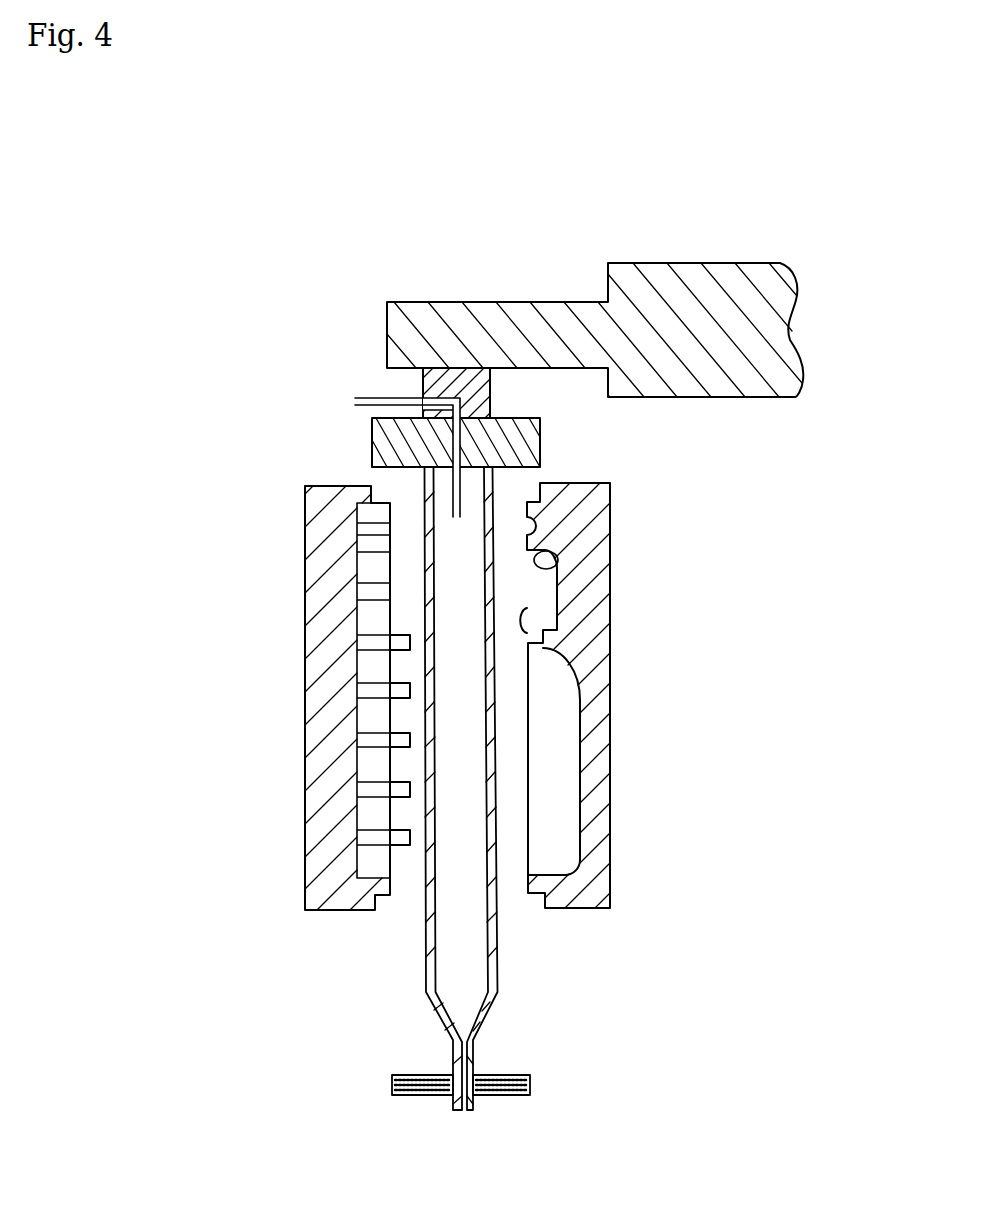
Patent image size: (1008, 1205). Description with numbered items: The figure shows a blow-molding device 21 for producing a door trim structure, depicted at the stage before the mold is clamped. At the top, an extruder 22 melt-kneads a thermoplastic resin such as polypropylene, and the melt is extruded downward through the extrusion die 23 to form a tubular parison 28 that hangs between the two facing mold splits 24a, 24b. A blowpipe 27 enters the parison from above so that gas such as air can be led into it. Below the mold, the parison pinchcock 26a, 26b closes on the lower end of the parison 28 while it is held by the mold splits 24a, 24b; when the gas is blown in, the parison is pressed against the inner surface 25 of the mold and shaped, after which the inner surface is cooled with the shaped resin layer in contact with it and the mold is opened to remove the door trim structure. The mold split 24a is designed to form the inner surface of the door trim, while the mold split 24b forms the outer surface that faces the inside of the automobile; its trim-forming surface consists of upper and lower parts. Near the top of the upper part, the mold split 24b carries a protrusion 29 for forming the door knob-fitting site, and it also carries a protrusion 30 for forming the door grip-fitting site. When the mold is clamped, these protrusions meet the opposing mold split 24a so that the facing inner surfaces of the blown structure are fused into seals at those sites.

The blow-molding device 21 is at (360, 260).
The extruder 22 is at (688, 263).
The extrusion die 23 is at (370, 450).
The mold split 24a is at (307, 700).
The mold split 24b is at (675, 695).
The inner surface of the mold 25 is at (578, 773).
The parison pinchcock 26a is at (392, 1087).
The parison pinchcock 26b is at (530, 1087).
The blowpipe 27 is at (360, 383).
The parison 28 is at (492, 481).
The protrusion for the door knob-fitting site 29 is at (557, 568).
The protrusion for the door grip-fitting site 30 is at (528, 606).